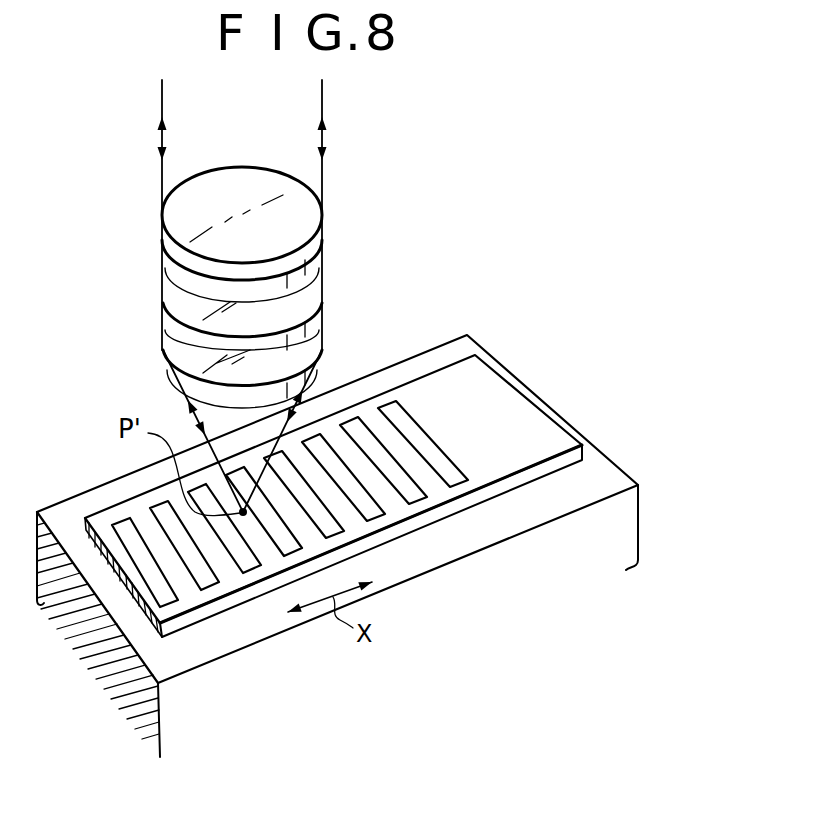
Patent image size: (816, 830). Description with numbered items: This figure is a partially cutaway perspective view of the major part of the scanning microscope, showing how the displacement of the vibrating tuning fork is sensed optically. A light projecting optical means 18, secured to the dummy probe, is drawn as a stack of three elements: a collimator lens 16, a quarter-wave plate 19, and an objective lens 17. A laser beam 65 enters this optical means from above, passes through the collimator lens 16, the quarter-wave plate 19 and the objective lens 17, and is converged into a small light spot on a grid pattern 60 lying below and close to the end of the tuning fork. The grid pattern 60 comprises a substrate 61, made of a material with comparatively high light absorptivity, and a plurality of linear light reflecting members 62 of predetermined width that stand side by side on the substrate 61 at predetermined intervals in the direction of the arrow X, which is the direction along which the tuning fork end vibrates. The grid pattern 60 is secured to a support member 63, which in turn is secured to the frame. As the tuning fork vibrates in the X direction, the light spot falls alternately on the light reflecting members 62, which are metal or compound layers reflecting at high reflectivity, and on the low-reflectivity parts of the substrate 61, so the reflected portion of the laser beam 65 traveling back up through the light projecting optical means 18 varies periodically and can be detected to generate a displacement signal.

The collimator lens 16 is at (300, 222).
The objective lens 17 is at (295, 344).
The light projecting optical means 18 is at (329, 287).
The quarter-wave plate 19 is at (310, 293).
The grid pattern 60 is at (456, 355).
The substrate 61 is at (523, 433).
The linear light reflecting members 62 is at (415, 500).
The support member 63 is at (607, 533).
The laser beam 65 is at (322, 110).